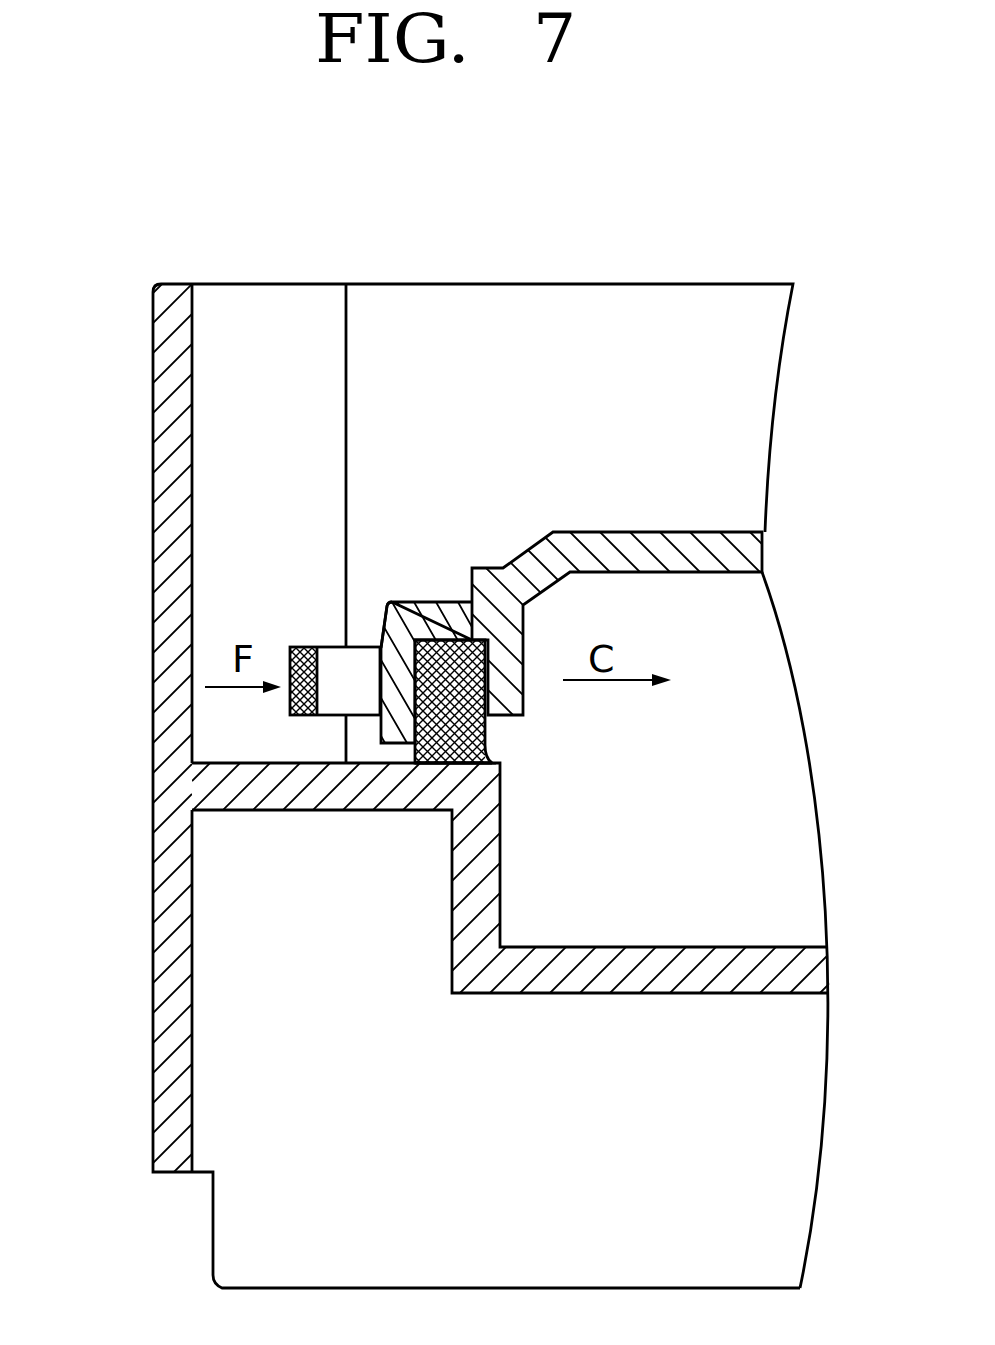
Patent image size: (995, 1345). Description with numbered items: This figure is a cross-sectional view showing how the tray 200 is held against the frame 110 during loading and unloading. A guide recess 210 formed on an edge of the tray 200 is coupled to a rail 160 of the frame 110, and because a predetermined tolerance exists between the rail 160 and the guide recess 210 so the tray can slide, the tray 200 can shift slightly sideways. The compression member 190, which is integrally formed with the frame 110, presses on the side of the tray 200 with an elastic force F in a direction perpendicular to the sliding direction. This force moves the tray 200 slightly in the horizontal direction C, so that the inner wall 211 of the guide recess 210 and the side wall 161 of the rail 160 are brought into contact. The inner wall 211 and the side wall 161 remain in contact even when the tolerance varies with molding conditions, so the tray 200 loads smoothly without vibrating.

The frame 110 is at (153, 1030).
The rail 160 is at (480, 733).
The side wall of the rail 161 is at (440, 768).
The compression member 190 is at (290, 645).
The tray 200 is at (649, 505).
The guide recess 210 is at (430, 612).
The inner wall of the guide recess 211 is at (397, 637).